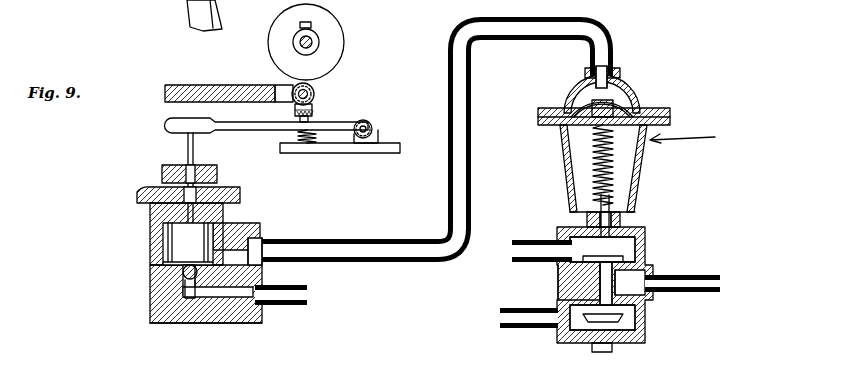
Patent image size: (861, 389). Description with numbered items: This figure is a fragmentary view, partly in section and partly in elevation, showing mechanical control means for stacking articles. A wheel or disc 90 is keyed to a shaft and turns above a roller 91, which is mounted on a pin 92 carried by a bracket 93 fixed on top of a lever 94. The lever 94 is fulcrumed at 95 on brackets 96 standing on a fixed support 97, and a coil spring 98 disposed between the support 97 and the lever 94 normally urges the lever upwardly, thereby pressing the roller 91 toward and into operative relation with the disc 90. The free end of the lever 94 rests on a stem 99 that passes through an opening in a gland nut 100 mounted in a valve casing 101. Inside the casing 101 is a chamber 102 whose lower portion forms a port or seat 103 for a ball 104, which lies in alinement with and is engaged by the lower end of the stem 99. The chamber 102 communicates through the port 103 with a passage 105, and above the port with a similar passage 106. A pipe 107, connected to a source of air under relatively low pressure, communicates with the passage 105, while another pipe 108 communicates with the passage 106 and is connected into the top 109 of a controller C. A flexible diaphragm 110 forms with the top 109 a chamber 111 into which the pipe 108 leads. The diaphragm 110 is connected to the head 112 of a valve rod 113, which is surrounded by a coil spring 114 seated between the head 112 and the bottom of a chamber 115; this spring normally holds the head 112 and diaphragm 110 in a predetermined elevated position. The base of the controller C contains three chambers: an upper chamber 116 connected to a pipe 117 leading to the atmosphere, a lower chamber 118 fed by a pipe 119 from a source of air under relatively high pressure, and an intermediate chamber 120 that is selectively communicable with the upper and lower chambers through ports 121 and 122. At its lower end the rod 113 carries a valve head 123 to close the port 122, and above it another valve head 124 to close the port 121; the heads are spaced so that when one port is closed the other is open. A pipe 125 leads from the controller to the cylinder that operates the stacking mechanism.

The wheel or disc 90 is at (333, 50).
The roller 91 is at (318, 96).
The pin 92 is at (293, 91).
The bracket 93 is at (314, 112).
The lever 94 is at (256, 127).
The fulcrum 95 is at (372, 127).
The brackets 96 is at (379, 134).
The fixed support 97 is at (368, 147).
The coil spring 98 is at (300, 145).
The stem 99 is at (186, 150).
The gland nut 100 is at (140, 197).
The valve casing 101 is at (188, 272).
The chamber 102 is at (167, 258).
The port or seat 103 is at (190, 302).
The ball 104 is at (170, 288).
The passage 105 is at (225, 300).
The passage 106 is at (245, 228).
The pipe or conduit 107 is at (296, 307).
The pipe 108 is at (388, 240).
The top of controller 109 is at (638, 92).
The flexible diaphragm 110 is at (578, 108).
The chamber 111 is at (600, 82).
The head 112 is at (563, 130).
The valve rod 113 is at (622, 222).
The coil spring 114 is at (614, 180).
The chamber 115 is at (588, 203).
The upper chamber 116 is at (630, 243).
The pipe 117 is at (540, 264).
The lower chamber 118 is at (630, 325).
The pipe 119 is at (545, 329).
The intermediate chamber 120 is at (625, 285).
The port 121 is at (625, 262).
The port 122 is at (573, 290).
The valve head 123 is at (595, 322).
The valve head 124 is at (568, 252).
The pipe or conduit 125 is at (715, 292).
The controller C is at (690, 138).